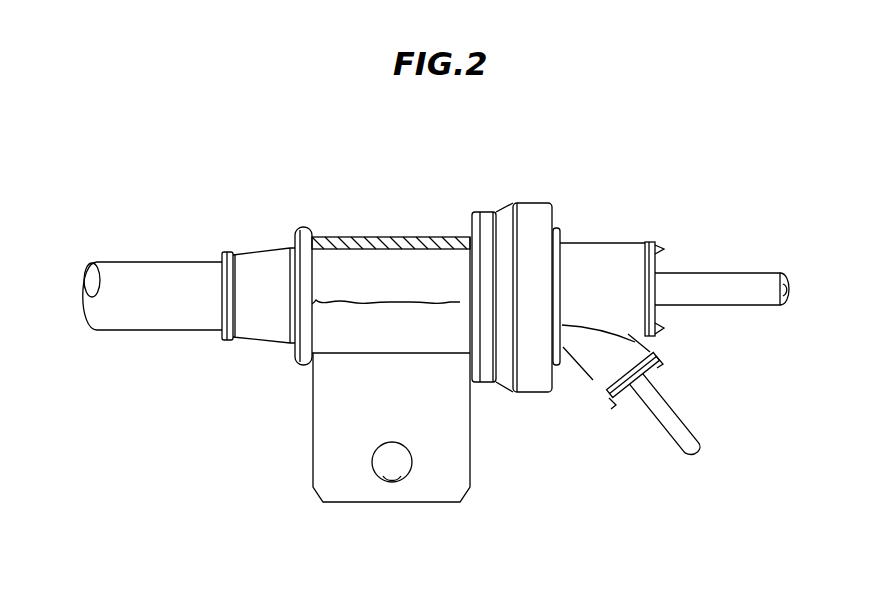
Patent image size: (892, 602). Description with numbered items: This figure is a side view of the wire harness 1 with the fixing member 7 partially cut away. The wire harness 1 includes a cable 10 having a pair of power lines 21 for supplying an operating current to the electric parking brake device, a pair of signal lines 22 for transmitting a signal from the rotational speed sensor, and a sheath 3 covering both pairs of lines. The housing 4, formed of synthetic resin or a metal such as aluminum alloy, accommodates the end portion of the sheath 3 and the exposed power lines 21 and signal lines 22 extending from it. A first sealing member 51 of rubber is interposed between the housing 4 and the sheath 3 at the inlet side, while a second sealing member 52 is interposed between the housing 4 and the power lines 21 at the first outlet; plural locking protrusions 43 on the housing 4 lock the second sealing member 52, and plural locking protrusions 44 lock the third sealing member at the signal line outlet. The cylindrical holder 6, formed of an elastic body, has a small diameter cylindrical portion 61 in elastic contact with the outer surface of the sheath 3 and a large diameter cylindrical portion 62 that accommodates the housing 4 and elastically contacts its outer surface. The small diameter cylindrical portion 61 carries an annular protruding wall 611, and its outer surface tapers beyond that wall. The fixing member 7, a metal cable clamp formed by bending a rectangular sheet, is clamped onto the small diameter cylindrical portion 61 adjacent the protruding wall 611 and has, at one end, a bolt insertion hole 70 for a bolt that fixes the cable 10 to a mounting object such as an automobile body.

The wire harness 1 is at (593, 135).
The sheath 3 is at (140, 260).
The housing 4 is at (618, 235).
The holder 6 is at (562, 203).
The fixing member 7 is at (363, 233).
The cable 10 is at (125, 338).
The power lines 21 is at (743, 275).
The signal lines 22 is at (685, 422).
The locking protrusions 43 is at (660, 247).
The locking protrusions 44 is at (655, 363).
The first sealing member 51 is at (655, 267).
The second sealing member 52 is at (620, 388).
The small diameter cylindrical portion 61 is at (405, 268).
The protruding wall 611 is at (303, 227).
The large diameter cylindrical portion 62 is at (527, 202).
The bolt insertion hole 70 is at (382, 480).